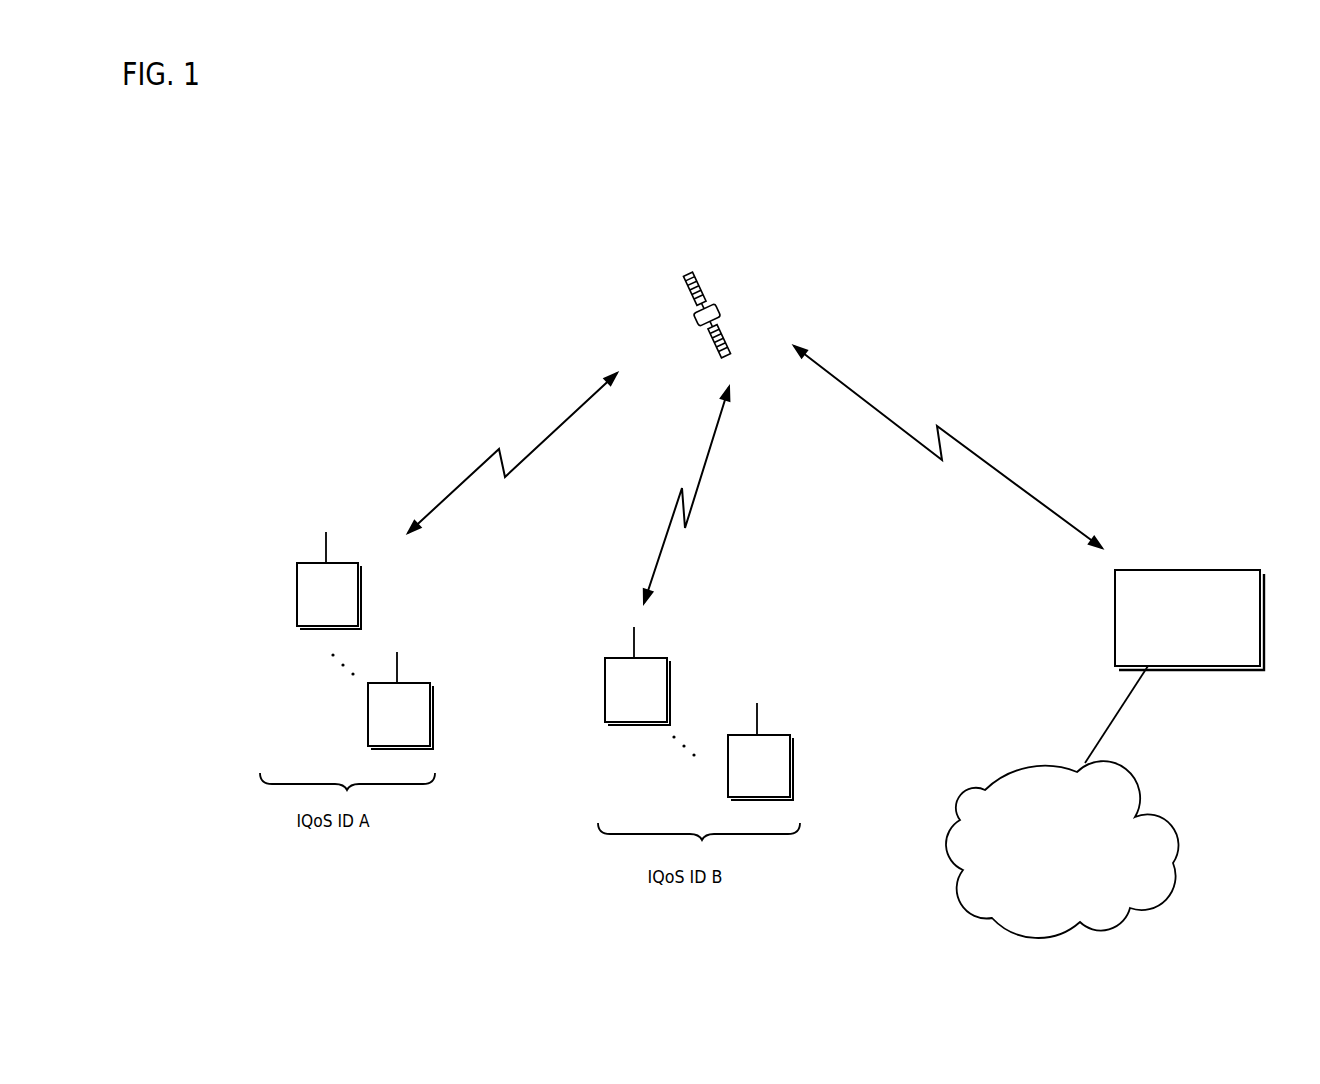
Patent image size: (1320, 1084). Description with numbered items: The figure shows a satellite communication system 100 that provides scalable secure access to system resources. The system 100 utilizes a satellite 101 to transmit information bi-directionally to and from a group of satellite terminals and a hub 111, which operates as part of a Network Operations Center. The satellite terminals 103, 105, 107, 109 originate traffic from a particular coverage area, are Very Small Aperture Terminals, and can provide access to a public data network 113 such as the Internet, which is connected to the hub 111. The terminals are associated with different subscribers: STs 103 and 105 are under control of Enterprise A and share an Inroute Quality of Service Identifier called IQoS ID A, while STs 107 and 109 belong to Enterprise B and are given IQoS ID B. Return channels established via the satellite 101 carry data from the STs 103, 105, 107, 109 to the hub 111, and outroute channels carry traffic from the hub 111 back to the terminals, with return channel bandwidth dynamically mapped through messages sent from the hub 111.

The satellite communication system 100 is at (590, 282).
The satellite 101 is at (717, 310).
The satellite terminal 103 is at (297, 595).
The satellite terminal 105 is at (368, 713).
The satellite terminal 107 is at (605, 690).
The satellite terminal 109 is at (728, 767).
The hub 111 is at (1187, 668).
The public data network 113 is at (1045, 914).